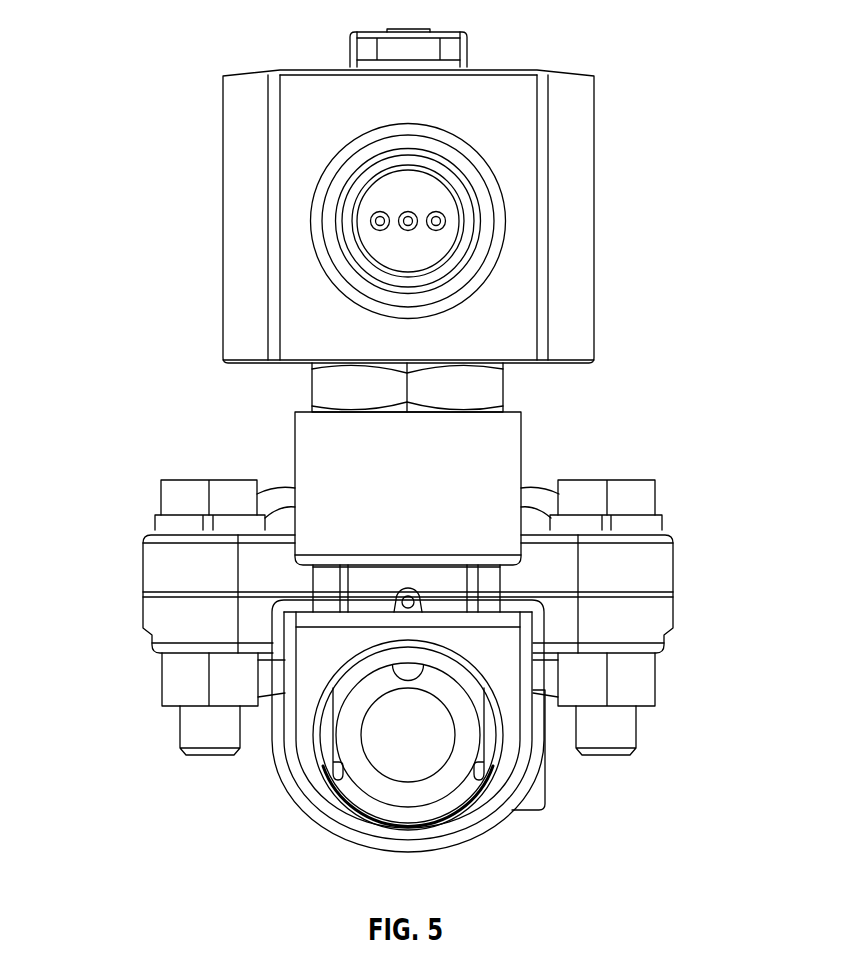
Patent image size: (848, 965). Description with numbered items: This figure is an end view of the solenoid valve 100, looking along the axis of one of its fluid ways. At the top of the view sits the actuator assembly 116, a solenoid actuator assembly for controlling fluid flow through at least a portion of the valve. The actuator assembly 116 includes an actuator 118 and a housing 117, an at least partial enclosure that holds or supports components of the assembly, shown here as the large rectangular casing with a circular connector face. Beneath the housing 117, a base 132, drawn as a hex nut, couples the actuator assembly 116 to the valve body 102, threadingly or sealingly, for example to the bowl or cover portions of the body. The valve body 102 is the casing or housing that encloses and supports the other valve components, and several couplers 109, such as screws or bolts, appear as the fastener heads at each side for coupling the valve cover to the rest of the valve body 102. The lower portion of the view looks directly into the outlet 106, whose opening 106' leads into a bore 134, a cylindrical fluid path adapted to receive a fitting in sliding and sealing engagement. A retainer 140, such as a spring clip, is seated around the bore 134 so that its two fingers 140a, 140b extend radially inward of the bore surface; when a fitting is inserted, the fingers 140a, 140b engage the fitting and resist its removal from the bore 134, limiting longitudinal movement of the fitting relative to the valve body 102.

The solenoid valve 100 is at (112, 35).
The valve body 102 is at (674, 548).
The outlet 106 is at (369, 740).
The bracket inner portion 106' is at (423, 760).
The coupler 109 is at (630, 478).
The actuator assembly 116 is at (636, 148).
The housing 117 is at (519, 67).
The actuator 118 is at (414, 30).
The base 132 is at (503, 389).
The bore 134 is at (367, 818).
The retainer 140 is at (482, 727).
The finger 140a is at (333, 773).
The finger 140b is at (478, 782).